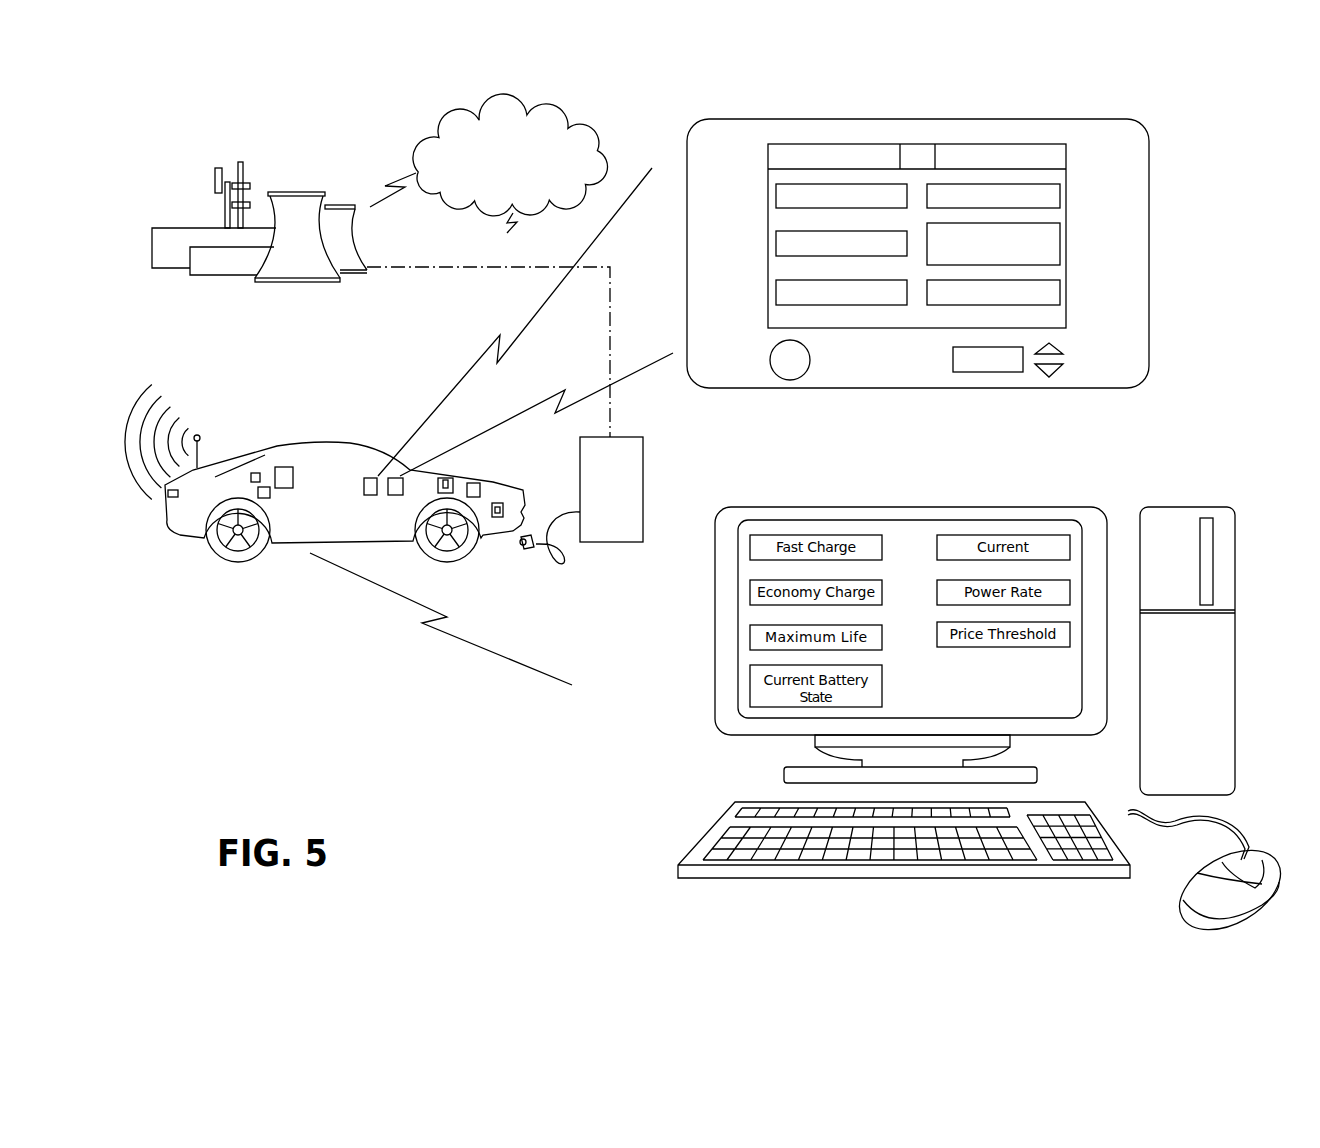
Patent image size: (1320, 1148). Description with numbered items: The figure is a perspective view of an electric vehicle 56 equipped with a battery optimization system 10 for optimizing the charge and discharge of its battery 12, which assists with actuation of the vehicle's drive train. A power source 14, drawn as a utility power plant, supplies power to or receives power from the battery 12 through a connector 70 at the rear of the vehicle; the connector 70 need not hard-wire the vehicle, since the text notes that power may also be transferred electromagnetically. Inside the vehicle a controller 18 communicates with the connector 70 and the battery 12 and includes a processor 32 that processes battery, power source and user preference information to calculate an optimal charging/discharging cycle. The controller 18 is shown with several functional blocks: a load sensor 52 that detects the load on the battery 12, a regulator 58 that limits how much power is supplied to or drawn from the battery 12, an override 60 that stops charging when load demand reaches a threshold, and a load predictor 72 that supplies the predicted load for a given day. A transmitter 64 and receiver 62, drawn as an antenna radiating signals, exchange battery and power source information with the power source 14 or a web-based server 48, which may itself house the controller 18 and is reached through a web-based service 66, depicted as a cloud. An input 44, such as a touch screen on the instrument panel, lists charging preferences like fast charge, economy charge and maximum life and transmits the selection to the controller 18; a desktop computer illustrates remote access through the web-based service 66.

The battery optimization system 10 is at (510, 142).
The power source 14 is at (300, 184).
The controller 18 is at (510, 155).
The web-based server 48 is at (510, 155).
The web-based service 66 is at (583, 80).
The input 44 is at (1151, 121).
The electric vehicle 56 is at (326, 429).
The transmitter 64 is at (214, 434).
The receiver 62 is at (198, 436).
The override 60 is at (255, 472).
The load predictor 72 is at (283, 467).
The regulator 58 is at (270, 498).
The load sensor 52 is at (372, 496).
The processor 32 is at (447, 478).
The battery 12 is at (480, 488).
The connector 70 is at (497, 520).